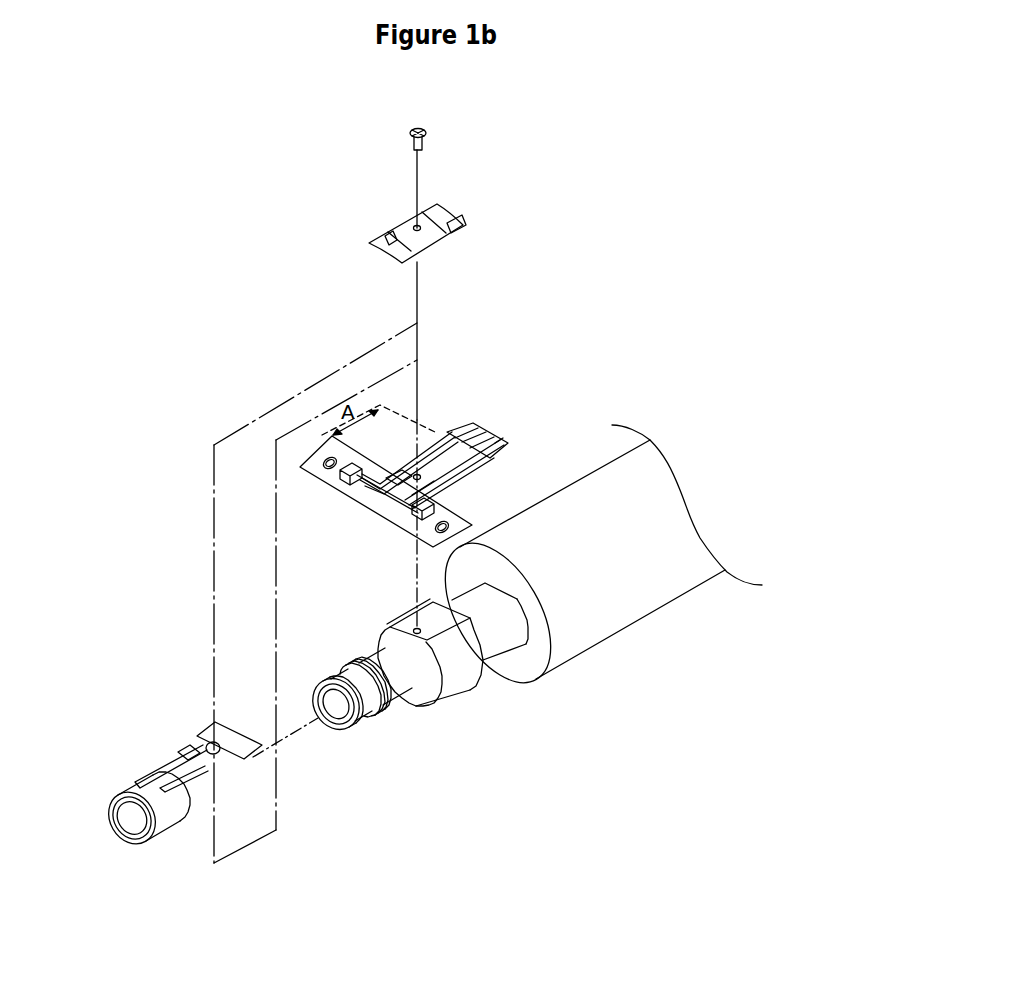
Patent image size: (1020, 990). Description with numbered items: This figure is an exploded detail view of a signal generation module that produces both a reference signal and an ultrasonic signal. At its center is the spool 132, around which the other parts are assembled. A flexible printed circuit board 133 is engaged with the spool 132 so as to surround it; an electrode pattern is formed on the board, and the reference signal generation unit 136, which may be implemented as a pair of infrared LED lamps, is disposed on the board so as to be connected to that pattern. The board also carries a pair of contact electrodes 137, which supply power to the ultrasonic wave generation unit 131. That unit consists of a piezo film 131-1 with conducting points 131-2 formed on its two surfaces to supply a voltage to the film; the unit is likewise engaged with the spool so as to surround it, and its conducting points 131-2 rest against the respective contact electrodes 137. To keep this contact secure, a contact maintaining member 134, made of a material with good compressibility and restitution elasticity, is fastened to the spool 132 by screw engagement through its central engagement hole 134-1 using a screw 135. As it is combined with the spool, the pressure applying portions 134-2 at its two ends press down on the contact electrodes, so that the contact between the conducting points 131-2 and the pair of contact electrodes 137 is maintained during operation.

The ultrasonic wave generation unit 131 is at (162, 843).
The piezo film 131-1 is at (185, 815).
The conducting points 131-2 is at (163, 823).
The spool 132 is at (459, 672).
The flexible printed circuit board 133 is at (463, 472).
The contact maintaining member 134 is at (457, 210).
The central engagement hole 134-1 is at (436, 208).
The pressure applying portions 134-2 is at (393, 232).
The screw 135 is at (427, 133).
The reference signal generation unit 136 is at (345, 478).
The contact electrodes 137 is at (448, 445).